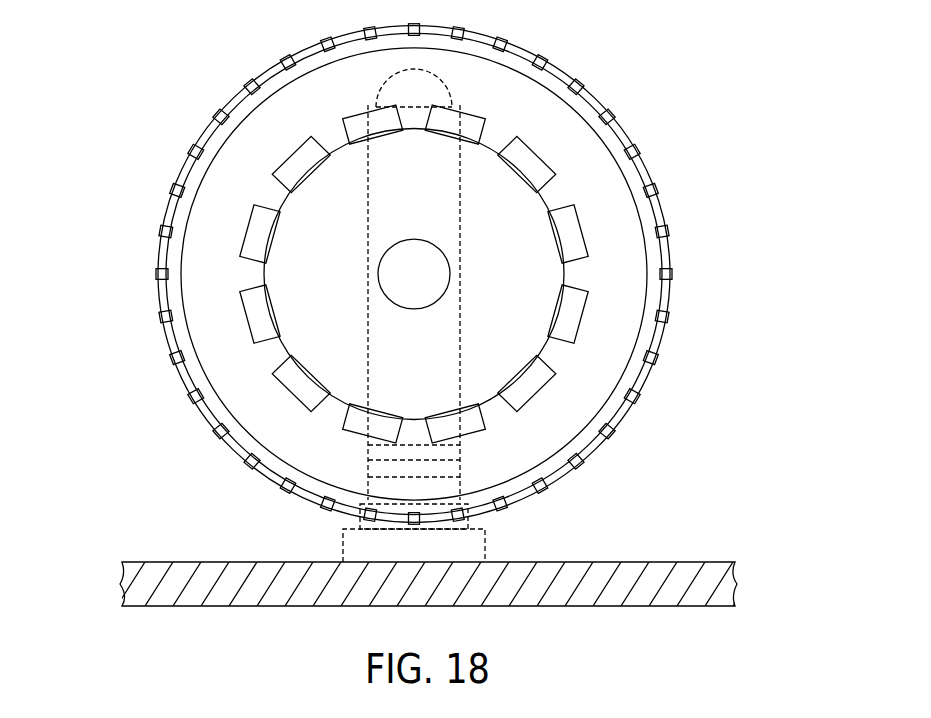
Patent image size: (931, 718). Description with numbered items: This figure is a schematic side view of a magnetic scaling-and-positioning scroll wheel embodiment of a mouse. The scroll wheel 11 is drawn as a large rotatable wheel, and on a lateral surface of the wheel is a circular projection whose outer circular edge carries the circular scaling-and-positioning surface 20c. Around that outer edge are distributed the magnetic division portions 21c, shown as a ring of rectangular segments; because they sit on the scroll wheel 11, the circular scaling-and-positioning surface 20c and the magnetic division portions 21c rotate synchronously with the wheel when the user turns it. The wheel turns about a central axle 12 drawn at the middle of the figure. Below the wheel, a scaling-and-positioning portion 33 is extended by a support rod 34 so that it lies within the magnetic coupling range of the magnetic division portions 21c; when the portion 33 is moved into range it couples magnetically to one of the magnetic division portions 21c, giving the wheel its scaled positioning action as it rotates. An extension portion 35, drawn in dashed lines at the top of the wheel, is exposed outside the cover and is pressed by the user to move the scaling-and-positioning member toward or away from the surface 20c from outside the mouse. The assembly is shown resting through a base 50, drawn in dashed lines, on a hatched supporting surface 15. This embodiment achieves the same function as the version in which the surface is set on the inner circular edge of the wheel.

The scroll wheel 11 is at (228, 90).
The axle 12 is at (427, 258).
The ground 15 is at (725, 583).
The circular scaling-and-positioning surface 20c is at (440, 274).
The magnetic division portions 21c is at (561, 193).
The scaling-and-positioning portion 33 is at (422, 452).
The support rod 34 is at (383, 466).
The extension portion 35 is at (420, 90).
The base 50 is at (478, 547).